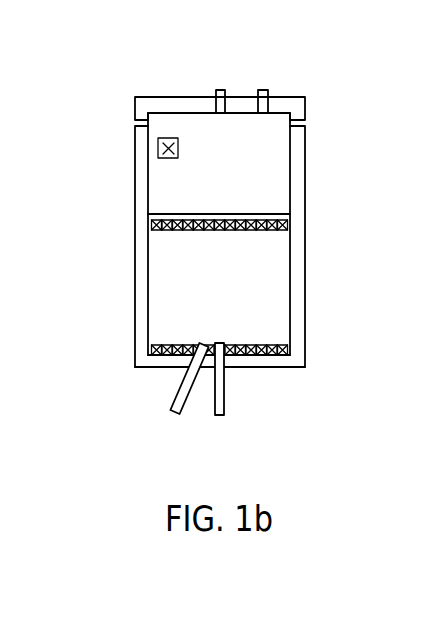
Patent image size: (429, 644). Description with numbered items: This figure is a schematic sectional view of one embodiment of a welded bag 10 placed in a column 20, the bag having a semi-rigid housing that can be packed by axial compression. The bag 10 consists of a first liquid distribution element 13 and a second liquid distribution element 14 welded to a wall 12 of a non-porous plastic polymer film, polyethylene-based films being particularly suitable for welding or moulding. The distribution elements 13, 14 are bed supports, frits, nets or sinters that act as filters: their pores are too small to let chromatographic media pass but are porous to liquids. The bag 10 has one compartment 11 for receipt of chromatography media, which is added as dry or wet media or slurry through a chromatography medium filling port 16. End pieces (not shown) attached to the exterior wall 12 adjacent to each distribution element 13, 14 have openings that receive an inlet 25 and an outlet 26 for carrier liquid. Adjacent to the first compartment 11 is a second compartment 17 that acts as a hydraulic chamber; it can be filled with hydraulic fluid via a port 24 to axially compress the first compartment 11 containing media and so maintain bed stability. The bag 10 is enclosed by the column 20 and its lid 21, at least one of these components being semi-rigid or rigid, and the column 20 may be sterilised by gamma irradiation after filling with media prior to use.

The welded bag 10 is at (262, 267).
The first compartment 11 is at (275, 308).
The wall 12 is at (151, 287).
The first liquid distribution element 13 is at (198, 350).
The second liquid distribution element 14 is at (182, 228).
The chromatography medium filling port 16 is at (225, 395).
The second compartment 17 is at (275, 178).
The column 20 is at (222, 253).
The lid 21 is at (148, 105).
The port 24 is at (268, 108).
The inlet 25 is at (183, 407).
The outlet 26 is at (213, 105).